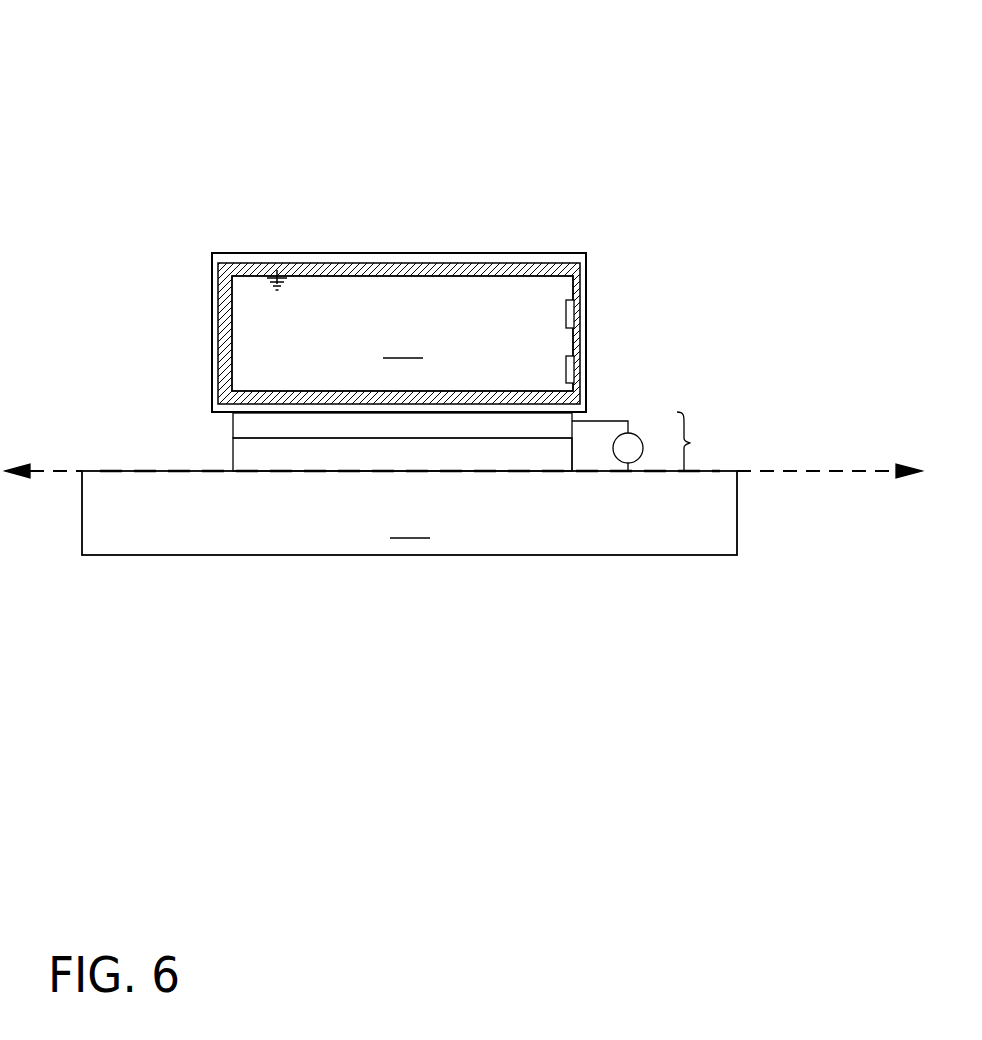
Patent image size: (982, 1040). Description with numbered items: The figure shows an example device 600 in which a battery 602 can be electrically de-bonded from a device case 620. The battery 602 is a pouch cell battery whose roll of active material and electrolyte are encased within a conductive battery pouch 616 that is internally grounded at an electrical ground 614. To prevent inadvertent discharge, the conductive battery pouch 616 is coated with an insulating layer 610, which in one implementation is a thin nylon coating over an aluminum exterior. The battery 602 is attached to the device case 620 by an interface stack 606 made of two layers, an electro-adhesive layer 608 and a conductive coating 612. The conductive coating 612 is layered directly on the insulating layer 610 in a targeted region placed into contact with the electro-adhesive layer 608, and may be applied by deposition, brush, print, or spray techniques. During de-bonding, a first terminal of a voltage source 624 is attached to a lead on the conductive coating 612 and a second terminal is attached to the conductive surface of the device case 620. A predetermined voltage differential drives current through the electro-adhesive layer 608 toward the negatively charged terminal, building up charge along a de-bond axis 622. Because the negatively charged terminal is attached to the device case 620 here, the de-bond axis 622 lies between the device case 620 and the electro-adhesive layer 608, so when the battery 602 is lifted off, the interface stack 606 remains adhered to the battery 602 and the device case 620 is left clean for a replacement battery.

The device 600 is at (672, 77).
The battery 602 is at (402, 333).
The interface stack 606 is at (690, 443).
The electro-adhesive layer 608 is at (250, 457).
The insulating layer 610 is at (496, 259).
The conductive coating 612 is at (562, 421).
The electrical ground 614 is at (282, 267).
The conductive battery pouch 616 is at (574, 296).
The device case 620 is at (409, 513).
The de-bond axis 622 is at (838, 470).
The voltage source 624 is at (637, 438).